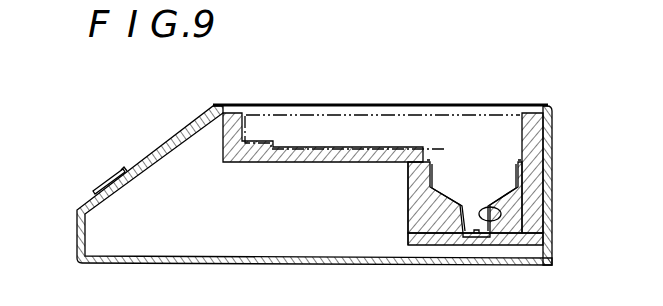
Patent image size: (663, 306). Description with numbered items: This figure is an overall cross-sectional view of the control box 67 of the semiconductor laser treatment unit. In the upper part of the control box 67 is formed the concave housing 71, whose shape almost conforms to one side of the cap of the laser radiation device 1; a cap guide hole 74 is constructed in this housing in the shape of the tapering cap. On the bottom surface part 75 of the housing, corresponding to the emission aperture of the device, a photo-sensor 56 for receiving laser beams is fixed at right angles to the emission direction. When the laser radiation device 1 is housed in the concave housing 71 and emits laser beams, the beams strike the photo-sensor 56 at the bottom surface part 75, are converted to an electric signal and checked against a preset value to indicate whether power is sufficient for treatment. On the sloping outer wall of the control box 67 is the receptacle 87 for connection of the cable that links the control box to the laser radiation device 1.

The control box 67 is at (450, 70).
The laser radiation device 1 is at (277, 114).
The concave housing 71 is at (505, 113).
The receptacle 87 is at (107, 175).
The cap guide hole 74 is at (497, 219).
The photo-sensor 56 is at (465, 240).
The bottom surface part 75 is at (478, 240).